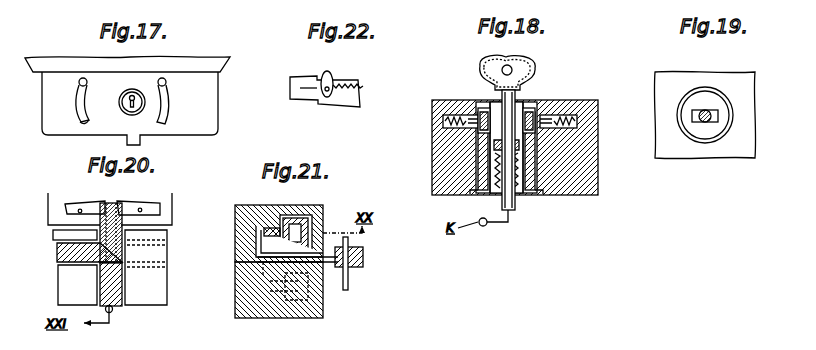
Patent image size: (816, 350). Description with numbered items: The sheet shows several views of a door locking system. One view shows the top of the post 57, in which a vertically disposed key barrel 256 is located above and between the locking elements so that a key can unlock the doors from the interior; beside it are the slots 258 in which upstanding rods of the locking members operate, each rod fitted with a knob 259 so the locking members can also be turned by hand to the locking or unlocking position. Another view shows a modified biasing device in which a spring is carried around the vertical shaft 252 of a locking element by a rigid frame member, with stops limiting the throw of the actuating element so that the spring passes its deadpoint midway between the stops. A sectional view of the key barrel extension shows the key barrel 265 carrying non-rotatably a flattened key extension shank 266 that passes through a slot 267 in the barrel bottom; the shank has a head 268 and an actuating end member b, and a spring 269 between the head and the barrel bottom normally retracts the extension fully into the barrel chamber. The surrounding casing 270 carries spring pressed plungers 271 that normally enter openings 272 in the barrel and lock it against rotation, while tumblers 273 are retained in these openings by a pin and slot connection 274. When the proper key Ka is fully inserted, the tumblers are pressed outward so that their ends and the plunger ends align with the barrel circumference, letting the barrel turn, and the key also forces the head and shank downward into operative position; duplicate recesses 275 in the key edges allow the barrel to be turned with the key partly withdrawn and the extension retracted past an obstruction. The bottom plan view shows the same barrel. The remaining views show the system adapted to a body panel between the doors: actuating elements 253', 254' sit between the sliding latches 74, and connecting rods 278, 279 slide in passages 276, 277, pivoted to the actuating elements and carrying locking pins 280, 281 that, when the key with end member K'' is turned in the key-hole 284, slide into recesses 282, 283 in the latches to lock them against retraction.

In FIG. 17, the post 57 is at (192, 110).
In FIG. 17, the key barrel 256 is at (124, 92).
In FIG. 17, the slots 258 is at (78, 116).
In FIG. 17, the knobs 259 is at (82, 80).
In FIG. 20, the sliding latches 74 is at (57, 255).
In FIG. 21, the sliding latches 74 is at (318, 226).
In FIG. 20, the actuating element 253' is at (147, 196).
In FIG. 20, the actuating element 254' is at (76, 195).
In FIG. 20, the key end member K'' is at (122, 191).
In FIG. 20, the key-hole 284 is at (116, 292).
In FIG. 22, the vertical shaft 252 is at (326, 96).
In FIG. 18, the key barrel 265 is at (478, 168).
In FIG. 19, the key barrel 265 is at (705, 95).
In FIG. 18, the key extension shank 266 is at (518, 212).
In FIG. 19, the key extension shank 266 is at (707, 122).
In FIG. 19, the slot 267 is at (697, 108).
In FIG. 18, the head 268 is at (525, 160).
In FIG. 18, the spring 269 is at (530, 180).
In FIG. 18, the casing 270 is at (598, 194).
In FIG. 18, the spring pressed plungers 271 is at (560, 118).
In FIG. 18, the openings 272 is at (540, 140).
In FIG. 18, the tumblers 273 is at (543, 108).
In FIG. 18, the pin and slot connection 274 is at (482, 106).
In FIG. 18, the recesses 275 is at (490, 140).
In FIG. 18, the key Ka is at (536, 63).
In FIG. 18, the actuating end member b is at (473, 218).
In FIG. 21, the passage 276 is at (284, 287).
In FIG. 21, the passage 277 is at (258, 260).
In FIG. 21, the connecting rod 278 is at (330, 270).
In FIG. 21, the connecting rod 279 is at (258, 249).
In FIG. 21, the locking pin 280 is at (266, 313).
In FIG. 21, the locking pin 281 is at (236, 222).
In FIG. 21, the recess 282 is at (323, 313).
In FIG. 21, the recess 283 is at (295, 226).